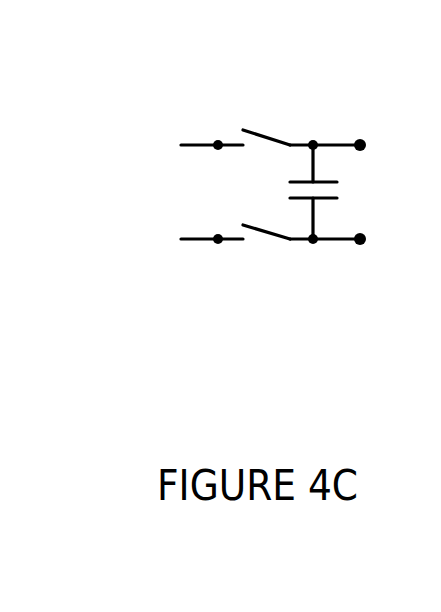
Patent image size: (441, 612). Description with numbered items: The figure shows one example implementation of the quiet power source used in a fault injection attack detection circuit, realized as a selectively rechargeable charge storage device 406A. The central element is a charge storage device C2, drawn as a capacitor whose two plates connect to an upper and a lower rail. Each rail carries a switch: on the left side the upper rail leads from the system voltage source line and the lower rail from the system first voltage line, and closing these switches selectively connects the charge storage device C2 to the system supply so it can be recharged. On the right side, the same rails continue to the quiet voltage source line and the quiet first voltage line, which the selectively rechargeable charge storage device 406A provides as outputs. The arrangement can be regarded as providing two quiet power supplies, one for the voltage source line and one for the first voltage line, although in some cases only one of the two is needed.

The selectively rechargeable charge storage device 406A is at (139, 86).
The charge storage device C2 is at (312, 192).